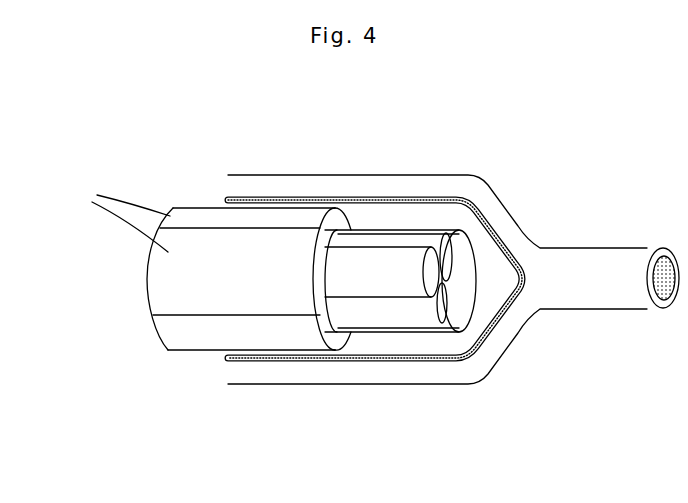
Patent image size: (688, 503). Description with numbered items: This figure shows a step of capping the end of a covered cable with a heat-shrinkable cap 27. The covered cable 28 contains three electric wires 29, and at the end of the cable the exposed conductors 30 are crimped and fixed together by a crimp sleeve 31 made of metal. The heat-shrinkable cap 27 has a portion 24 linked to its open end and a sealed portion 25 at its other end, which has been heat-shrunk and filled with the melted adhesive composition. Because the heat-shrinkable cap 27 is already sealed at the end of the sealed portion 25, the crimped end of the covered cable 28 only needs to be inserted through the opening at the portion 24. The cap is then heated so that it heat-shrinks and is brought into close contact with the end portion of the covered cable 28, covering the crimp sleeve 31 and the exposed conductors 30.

The portion linked to the other opening end 24 is at (418, 145).
The sealed portion 25 is at (638, 223).
The heat-shrinkable cap 27 is at (552, 362).
The covered cable 28 is at (184, 168).
The electric wires 29 is at (108, 206).
The exposed conductors 30 is at (367, 285).
The crimp sleeve 31 is at (468, 320).